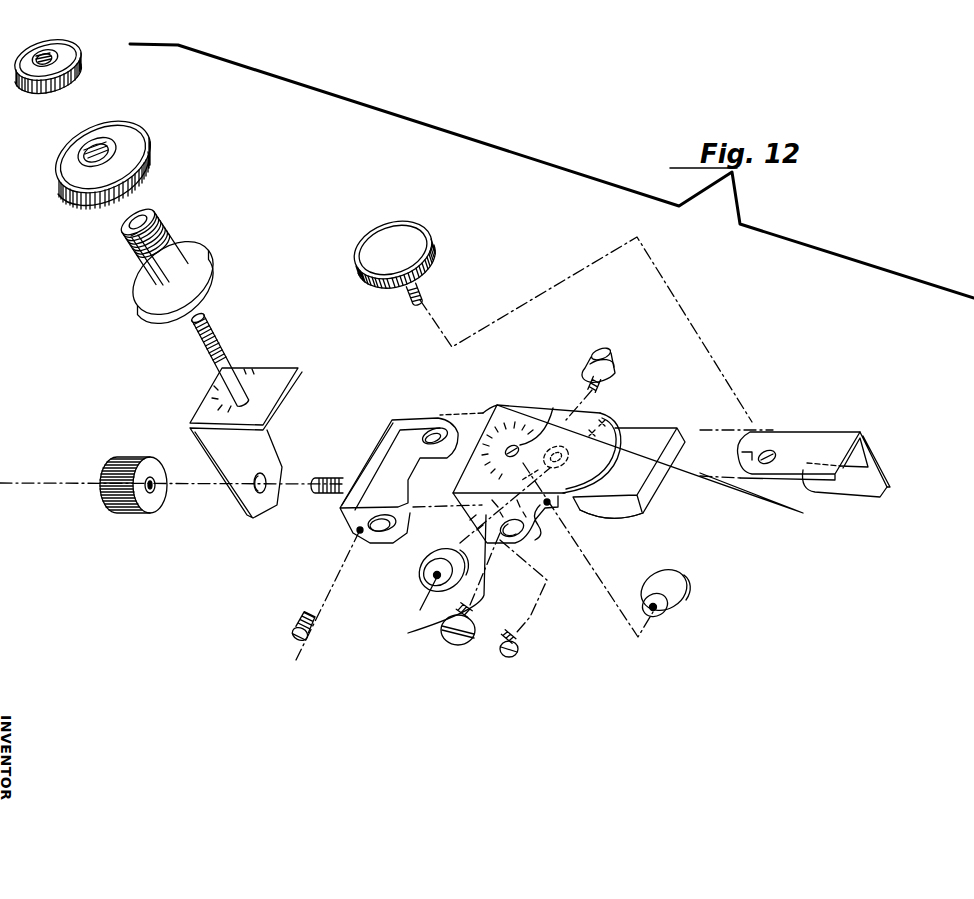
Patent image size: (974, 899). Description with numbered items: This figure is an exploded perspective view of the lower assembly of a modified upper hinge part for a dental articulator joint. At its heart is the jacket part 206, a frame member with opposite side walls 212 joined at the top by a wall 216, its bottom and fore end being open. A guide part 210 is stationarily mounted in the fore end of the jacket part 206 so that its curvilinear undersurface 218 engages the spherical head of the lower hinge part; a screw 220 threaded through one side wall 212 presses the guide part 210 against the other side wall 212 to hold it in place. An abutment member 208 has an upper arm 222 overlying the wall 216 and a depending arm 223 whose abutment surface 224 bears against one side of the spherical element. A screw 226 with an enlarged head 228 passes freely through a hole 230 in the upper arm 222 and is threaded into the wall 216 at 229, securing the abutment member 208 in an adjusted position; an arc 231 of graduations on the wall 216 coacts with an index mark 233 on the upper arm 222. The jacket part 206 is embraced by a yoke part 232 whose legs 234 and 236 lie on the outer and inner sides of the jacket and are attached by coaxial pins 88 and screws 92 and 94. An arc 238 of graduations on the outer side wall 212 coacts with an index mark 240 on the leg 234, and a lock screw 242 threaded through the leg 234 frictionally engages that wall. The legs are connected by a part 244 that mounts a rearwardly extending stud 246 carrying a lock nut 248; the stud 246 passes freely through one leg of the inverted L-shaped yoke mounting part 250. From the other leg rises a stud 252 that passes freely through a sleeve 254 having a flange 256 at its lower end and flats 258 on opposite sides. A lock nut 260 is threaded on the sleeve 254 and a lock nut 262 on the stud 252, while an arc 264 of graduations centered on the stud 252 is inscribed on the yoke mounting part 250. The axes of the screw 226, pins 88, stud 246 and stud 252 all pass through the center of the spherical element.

The lock nut 262 is at (82, 70).
The lock nut 260 is at (147, 148).
The flat 258 is at (146, 213).
The sleeve 254 is at (161, 253).
The flange 256 is at (197, 248).
The stud 252 is at (218, 338).
The yoke mounting part 250 is at (226, 424).
The arc of graduations 264 is at (212, 402).
The lock nut 248 is at (133, 517).
The stud 246 is at (330, 467).
The part 244 is at (374, 450).
The leg 236 is at (409, 430).
The yoke part 232 is at (367, 478).
The leg 234 is at (347, 519).
The index mark 240 is at (353, 534).
The lock screw 242 is at (295, 650).
The enlarged head 228 is at (407, 268).
The screw 226 is at (409, 302).
The jacket part 206 is at (533, 430).
The wall 216 is at (569, 416).
The threaded portion 229 is at (552, 408).
The arc of graduations 231 is at (483, 448).
The side wall 212 is at (600, 416).
The screw 94 is at (617, 356).
The guide part 210 is at (629, 472).
The curvilinear undersurface 218 is at (630, 512).
The upper arm 222 is at (834, 432).
The arm 223 is at (889, 478).
The abutment surface 224 is at (848, 488).
The hole 230 is at (773, 446).
The index mark 233 is at (751, 453).
The abutment member 208 is at (840, 451).
The pin 88 is at (419, 580).
The arc of graduations 238 is at (431, 583).
The screw 92 is at (457, 647).
The screw 220 is at (523, 647).